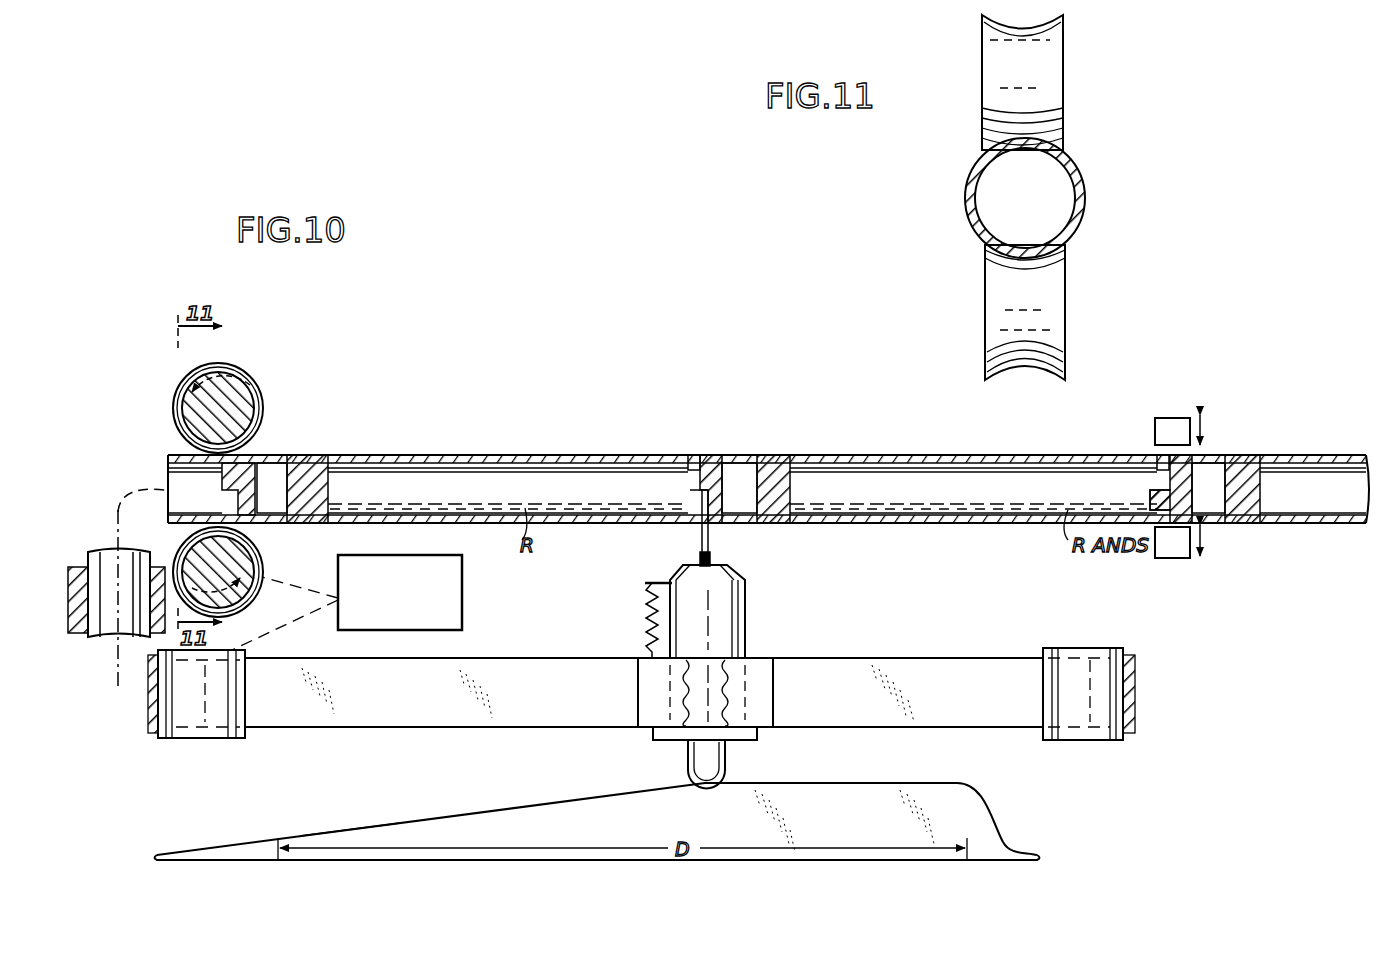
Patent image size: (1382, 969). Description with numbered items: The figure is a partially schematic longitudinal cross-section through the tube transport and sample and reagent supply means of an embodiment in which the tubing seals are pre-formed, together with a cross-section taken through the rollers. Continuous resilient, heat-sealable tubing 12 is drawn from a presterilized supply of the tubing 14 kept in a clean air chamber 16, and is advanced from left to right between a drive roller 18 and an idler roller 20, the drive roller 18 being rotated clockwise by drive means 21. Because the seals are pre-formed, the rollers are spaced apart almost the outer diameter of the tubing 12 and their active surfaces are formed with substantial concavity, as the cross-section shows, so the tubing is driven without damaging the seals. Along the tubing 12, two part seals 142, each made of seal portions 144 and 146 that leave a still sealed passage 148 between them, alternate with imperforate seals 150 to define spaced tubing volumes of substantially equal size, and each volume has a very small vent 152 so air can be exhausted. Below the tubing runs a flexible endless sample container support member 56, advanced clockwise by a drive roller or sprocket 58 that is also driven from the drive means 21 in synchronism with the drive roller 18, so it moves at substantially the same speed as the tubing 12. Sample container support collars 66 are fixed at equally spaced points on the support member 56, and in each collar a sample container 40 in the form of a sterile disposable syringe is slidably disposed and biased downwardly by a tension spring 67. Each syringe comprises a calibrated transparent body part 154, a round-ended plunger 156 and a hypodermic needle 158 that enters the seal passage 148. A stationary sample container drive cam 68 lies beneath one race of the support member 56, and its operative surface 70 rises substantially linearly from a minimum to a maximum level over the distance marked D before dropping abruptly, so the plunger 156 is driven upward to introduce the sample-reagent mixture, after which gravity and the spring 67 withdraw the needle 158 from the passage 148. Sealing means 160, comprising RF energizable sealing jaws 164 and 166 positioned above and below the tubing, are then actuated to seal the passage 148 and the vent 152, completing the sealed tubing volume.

In FIG. 10, the tubing 12 is at (520, 455).
In FIG. 11, the tubing 12 is at (1085, 200).
In FIG. 10, the supply of the tubing 14 is at (100, 552).
In FIG. 10, the clean air chamber 16 is at (82, 634).
In FIG. 10, the drive roller 18 is at (258, 566).
In FIG. 11, the drive roller 18 is at (1063, 305).
In FIG. 10, the idler roller 20 is at (215, 392).
In FIG. 11, the idler roller 20 is at (1063, 88).
In FIG. 10, the drive means 21 is at (462, 622).
In FIG. 10, the sample container 40 is at (748, 601).
In FIG. 10, the sample container support member 56 is at (644, 692).
In FIG. 10, the drive roller or drive sprocket 58 is at (245, 738).
In FIG. 10, the sample container support collar 66 is at (770, 673).
In FIG. 10, the tension spring 67 is at (647, 620).
In FIG. 10, the sample container drive cam 68 is at (615, 805).
In FIG. 10, the operative surface 70 is at (500, 815).
In FIG. 10, the two part seal 142 is at (265, 455).
In FIG. 10, the seal portion 144 is at (710, 458).
In FIG. 10, the seal portion 146 is at (695, 520).
In FIG. 10, the sealed passage 148 is at (690, 497).
In FIG. 10, the imperforate seal 150 is at (310, 458).
In FIG. 10, the vent 152 is at (405, 457).
In FIG. 10, the body part 154 is at (746, 632).
In FIG. 10, the plunger 156 is at (727, 766).
In FIG. 10, the hypodermic needle 158 is at (710, 540).
In FIG. 10, the sealing means 160 is at (1145, 418).
In FIG. 10, the sealing jaw 164 is at (1162, 455).
In FIG. 10, the sealing jaw 166 is at (1172, 548).